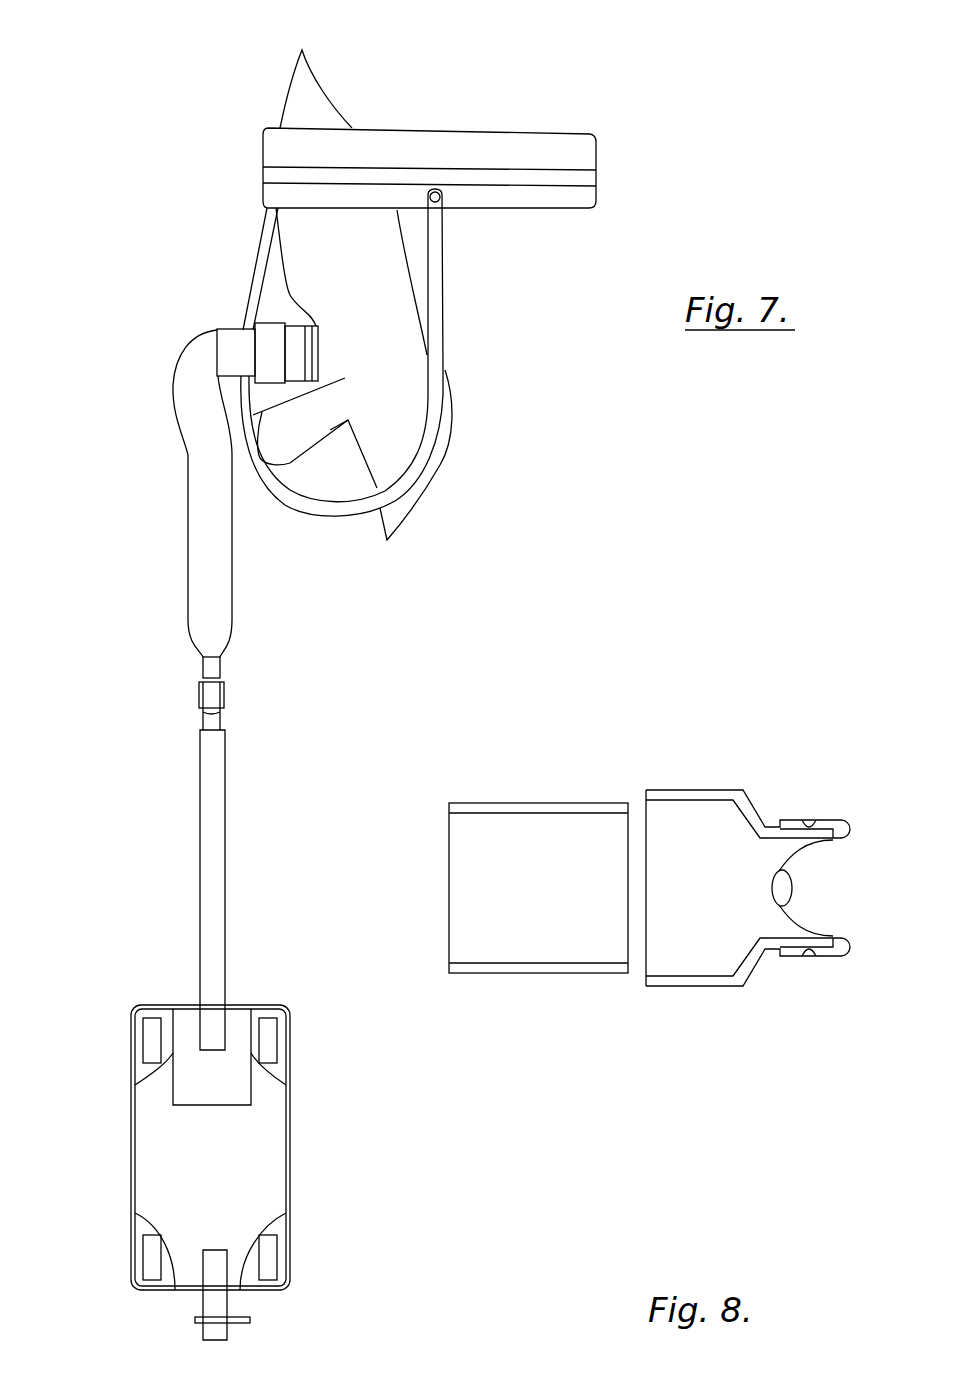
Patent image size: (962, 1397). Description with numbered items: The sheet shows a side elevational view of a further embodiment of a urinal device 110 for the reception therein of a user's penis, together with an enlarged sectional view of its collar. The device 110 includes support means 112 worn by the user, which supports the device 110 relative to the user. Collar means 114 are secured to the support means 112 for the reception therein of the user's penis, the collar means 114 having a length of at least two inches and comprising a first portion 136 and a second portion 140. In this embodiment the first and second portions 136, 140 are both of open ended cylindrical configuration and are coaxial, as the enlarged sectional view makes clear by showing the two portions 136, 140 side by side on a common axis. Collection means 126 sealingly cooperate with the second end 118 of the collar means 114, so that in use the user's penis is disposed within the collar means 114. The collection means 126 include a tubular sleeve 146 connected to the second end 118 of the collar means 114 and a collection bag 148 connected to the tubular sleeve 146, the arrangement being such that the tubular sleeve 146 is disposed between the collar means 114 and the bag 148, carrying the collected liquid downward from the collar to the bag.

In FIG. 7, the urinal device 110 is at (175, 162).
In FIG. 7, the support means 112 is at (258, 243).
In FIG. 7, the collar means 114 is at (218, 307).
In FIG. 8, the collar means 114 is at (755, 1083).
In FIG. 7, the second end 118 is at (215, 376).
In FIG. 7, the collection means 126 is at (233, 571).
In FIG. 7, the first portion 136 is at (275, 328).
In FIG. 8, the first portion 136 is at (709, 980).
In FIG. 7, the second portion 140 is at (232, 342).
In FIG. 8, the second portion 140 is at (545, 970).
In FIG. 7, the tubular sleeve 146 is at (212, 862).
In FIG. 7, the collection bag 148 is at (255, 1194).